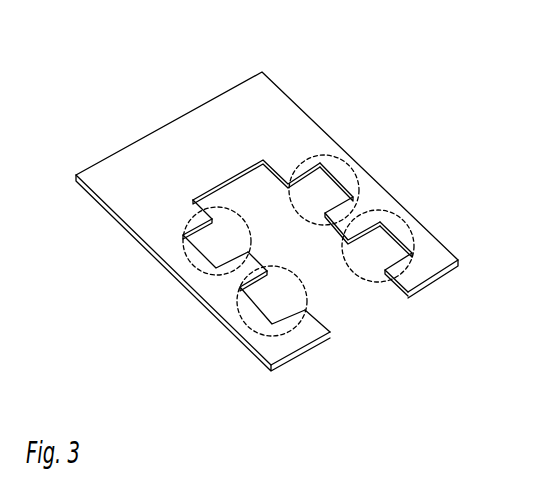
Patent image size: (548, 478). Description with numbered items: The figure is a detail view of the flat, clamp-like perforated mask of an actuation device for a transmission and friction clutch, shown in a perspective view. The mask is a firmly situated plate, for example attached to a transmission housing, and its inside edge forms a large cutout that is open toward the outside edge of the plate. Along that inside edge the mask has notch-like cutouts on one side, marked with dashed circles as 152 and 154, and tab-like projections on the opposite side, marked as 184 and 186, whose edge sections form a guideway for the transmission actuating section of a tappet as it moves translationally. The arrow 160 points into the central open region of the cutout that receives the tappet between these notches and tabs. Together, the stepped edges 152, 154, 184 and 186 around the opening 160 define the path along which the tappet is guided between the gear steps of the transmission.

The notch 152 is at (248, 325).
The notch 154 is at (190, 272).
The slot opening 160 is at (322, 268).
The tab 184 is at (212, 115).
The tab 186 is at (405, 224).